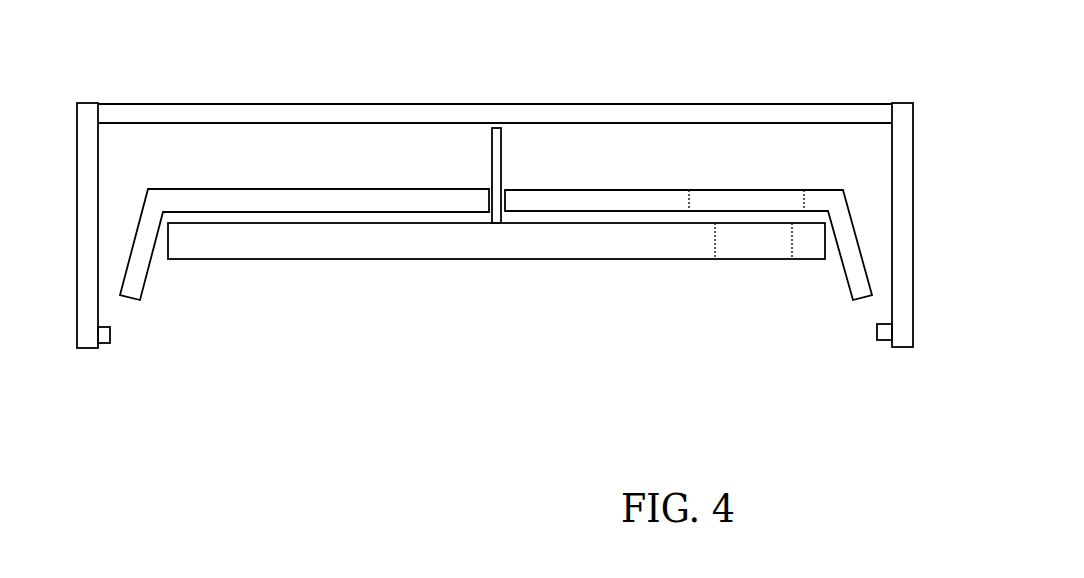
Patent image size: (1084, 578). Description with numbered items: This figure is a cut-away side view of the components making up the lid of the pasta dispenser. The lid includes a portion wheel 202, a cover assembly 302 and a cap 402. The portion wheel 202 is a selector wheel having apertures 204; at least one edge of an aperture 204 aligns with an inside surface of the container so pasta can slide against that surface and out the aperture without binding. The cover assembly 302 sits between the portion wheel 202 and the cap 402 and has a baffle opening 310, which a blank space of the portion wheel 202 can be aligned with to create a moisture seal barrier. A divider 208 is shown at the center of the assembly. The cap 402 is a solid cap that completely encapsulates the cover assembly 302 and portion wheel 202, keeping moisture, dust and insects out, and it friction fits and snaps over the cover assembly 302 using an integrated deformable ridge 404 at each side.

The cap 402 is at (645, 110).
The divider 208 is at (488, 158).
The cover assembly 302 is at (213, 201).
The baffle opening 310 is at (744, 203).
The portion wheel 202 is at (385, 253).
The aperture 204 is at (738, 250).
The integrated deformable ridge 404 is at (110, 337).